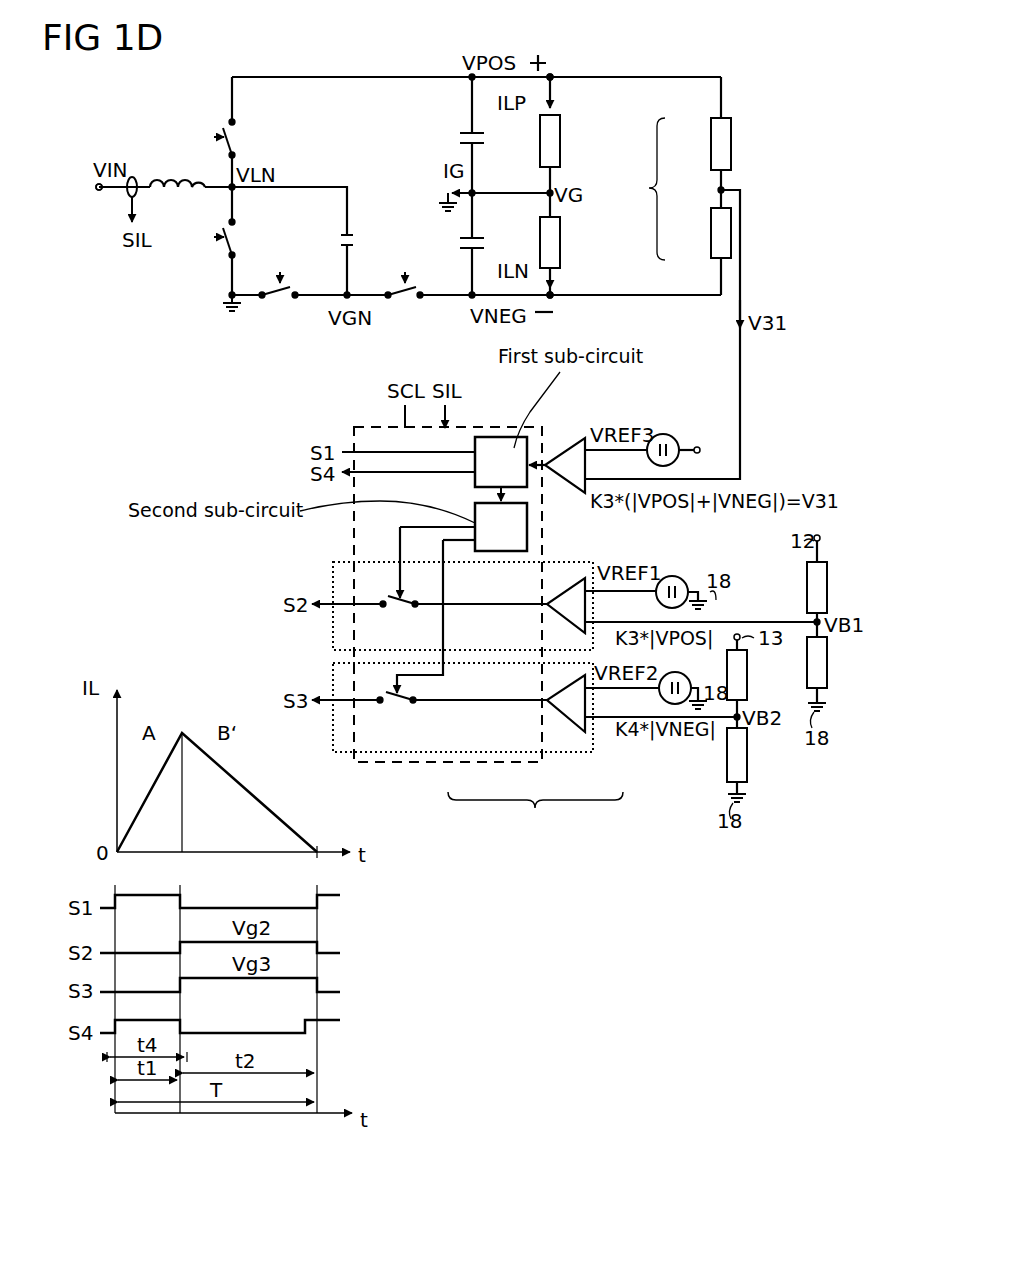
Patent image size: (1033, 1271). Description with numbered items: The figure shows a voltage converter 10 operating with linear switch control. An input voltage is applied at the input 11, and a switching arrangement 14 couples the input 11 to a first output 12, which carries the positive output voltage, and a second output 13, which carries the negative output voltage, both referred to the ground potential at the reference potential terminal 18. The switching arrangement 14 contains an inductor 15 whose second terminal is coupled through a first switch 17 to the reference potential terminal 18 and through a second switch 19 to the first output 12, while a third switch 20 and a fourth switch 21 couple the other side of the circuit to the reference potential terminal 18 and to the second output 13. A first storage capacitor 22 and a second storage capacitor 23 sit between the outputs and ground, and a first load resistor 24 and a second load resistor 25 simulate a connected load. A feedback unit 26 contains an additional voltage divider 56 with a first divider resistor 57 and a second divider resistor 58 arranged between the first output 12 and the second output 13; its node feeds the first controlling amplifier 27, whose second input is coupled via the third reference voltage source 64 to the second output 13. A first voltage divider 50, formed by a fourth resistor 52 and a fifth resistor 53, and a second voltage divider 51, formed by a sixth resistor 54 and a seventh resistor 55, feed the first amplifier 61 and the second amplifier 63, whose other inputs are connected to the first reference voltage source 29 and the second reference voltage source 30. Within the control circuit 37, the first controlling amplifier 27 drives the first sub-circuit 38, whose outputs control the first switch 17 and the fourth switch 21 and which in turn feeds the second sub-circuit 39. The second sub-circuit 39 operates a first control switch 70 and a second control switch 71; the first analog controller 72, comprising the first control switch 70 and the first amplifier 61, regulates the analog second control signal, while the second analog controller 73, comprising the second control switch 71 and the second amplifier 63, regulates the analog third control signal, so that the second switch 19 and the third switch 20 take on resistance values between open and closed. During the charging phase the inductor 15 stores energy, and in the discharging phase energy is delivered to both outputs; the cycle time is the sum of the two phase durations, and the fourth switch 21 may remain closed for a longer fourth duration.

The voltage converter 10 is at (117, 125).
The input 11 is at (97, 195).
The first output 12 is at (555, 72).
The second output 13 is at (555, 300).
The switching arrangement 14 is at (187, 100).
The inductor 15 is at (178, 196).
The first switch 17 is at (236, 240).
The reference potential terminal 18 is at (225, 300).
The second switch 19 is at (236, 140).
The third switch 20 is at (279, 304).
The fourth switch 21 is at (405, 304).
The first storage capacitor 22 is at (465, 134).
The second storage capacitor 23 is at (470, 249).
The first load resistor 24 is at (560, 140).
The second load resistor 25 is at (560, 243).
The feedback unit 26 is at (535, 814).
The first controlling amplifier 27 is at (563, 444).
The first reference voltage source 29 is at (673, 577).
The second reference voltage source 30 is at (685, 672).
The control circuit 37 is at (399, 764).
The first sub-circuit 38 is at (501, 435).
The second sub-circuit 39 is at (475, 513).
The first voltage divider 50 is at (803, 623).
The second voltage divider 51 is at (776, 718).
The fourth resistor 52 is at (804, 600).
The fifth resistor 53 is at (828, 665).
The sixth resistor 54 is at (748, 678).
The seventh resistor 55 is at (748, 766).
The additional voltage divider 56 is at (648, 189).
The first divider resistor 57 is at (711, 142).
The second divider resistor 58 is at (711, 232).
The first amplifier 61 is at (565, 601).
The second amplifier 63 is at (565, 722).
The third reference voltage source 64 is at (658, 433).
The first control switch 70 is at (400, 612).
The second control switch 71 is at (397, 708).
The first analog controller 72 is at (572, 560).
The second analog controller 73 is at (596, 751).